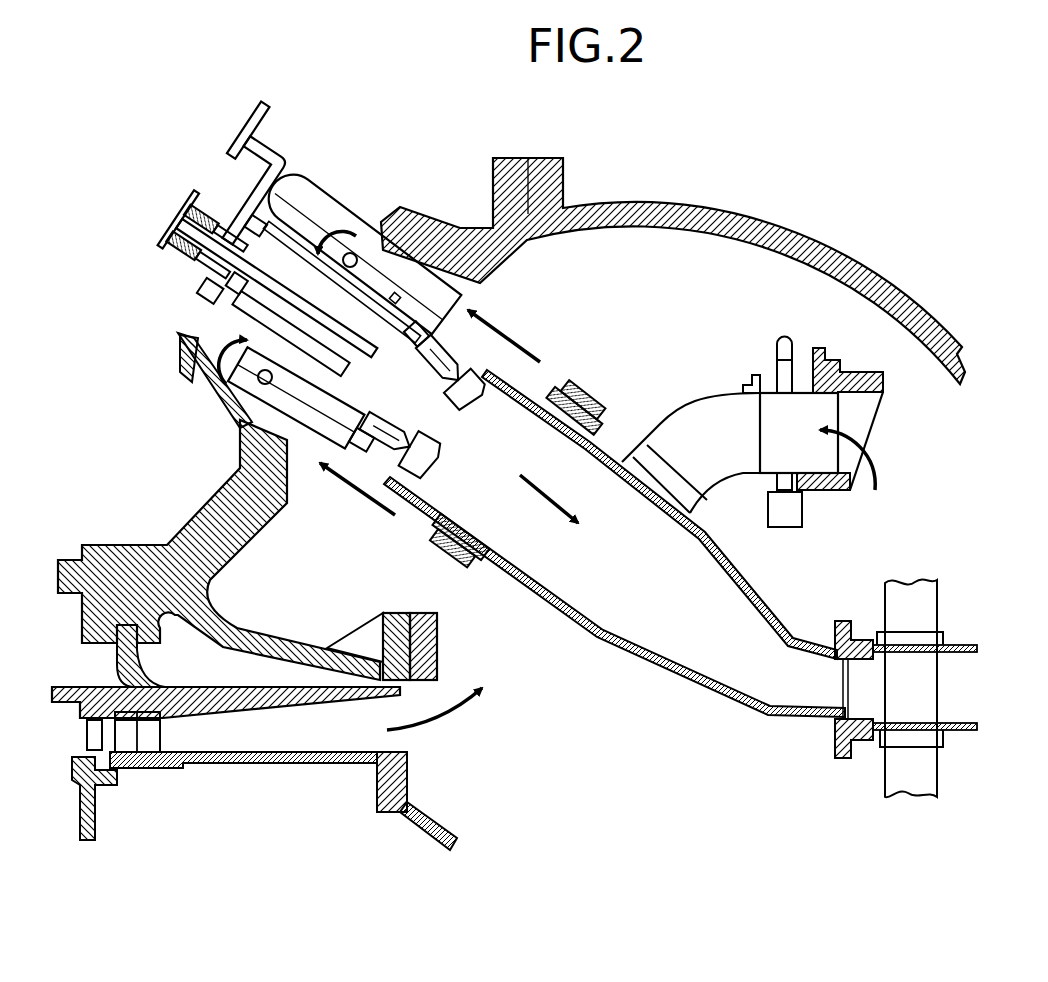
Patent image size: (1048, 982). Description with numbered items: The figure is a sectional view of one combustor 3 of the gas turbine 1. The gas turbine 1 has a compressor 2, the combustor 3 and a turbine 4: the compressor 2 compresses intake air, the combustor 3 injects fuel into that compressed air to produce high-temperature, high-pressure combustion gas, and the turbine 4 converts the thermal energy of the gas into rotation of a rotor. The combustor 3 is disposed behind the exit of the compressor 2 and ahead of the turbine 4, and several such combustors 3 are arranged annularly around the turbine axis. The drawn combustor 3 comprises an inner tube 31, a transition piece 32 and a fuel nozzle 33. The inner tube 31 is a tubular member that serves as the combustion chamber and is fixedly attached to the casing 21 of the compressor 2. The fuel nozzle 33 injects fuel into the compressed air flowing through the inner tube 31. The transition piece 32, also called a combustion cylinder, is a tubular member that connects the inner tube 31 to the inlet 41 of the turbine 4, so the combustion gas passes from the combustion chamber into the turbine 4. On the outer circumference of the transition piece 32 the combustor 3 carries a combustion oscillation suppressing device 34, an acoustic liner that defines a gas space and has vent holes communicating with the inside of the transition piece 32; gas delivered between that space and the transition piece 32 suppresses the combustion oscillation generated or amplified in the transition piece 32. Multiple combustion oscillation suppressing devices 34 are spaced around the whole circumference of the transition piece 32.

The gas turbine 1 is at (855, 215).
The compressor 2 is at (246, 591).
The combustor 3 is at (314, 283).
The turbine 4 is at (935, 722).
The casing 21 is at (197, 510).
The inner tube 31 is at (358, 252).
The transition piece 32 is at (565, 632).
The fuel nozzle 33 is at (397, 292).
The combustion oscillation suppressing device 34 is at (578, 395).
The inlet 41 is at (863, 760).